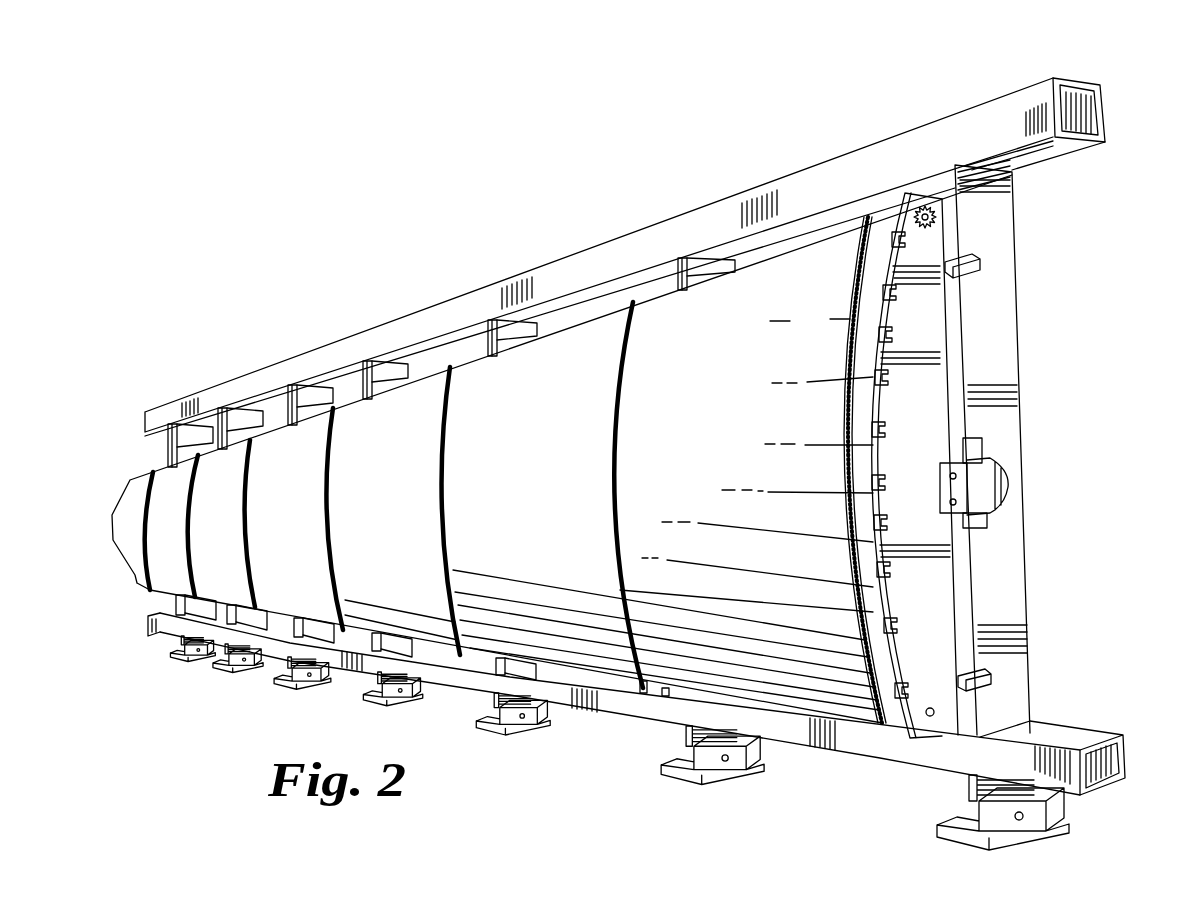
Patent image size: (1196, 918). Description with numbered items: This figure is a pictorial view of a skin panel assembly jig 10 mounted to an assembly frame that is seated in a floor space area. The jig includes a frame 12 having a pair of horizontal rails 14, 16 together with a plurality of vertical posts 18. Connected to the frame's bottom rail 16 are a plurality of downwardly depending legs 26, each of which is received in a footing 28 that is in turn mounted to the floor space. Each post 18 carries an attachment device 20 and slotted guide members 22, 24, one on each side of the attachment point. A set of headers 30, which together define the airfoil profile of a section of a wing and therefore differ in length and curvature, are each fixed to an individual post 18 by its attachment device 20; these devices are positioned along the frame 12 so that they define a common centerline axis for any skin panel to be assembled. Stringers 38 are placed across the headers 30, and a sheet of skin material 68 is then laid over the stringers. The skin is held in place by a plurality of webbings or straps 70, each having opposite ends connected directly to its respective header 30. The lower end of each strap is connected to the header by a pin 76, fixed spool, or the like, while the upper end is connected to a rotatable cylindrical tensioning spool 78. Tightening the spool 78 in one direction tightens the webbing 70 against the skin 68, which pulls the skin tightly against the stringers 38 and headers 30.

The skin panel assembly jig 10 is at (1107, 270).
The frame 12 is at (538, 268).
The horizontal rail 14 is at (917, 136).
The bottom rail 16 is at (648, 705).
The vertical post 18 is at (1003, 352).
The attachment device 20 is at (1010, 487).
The slotted guide member 22 is at (983, 263).
The slotted guide member 24 is at (990, 672).
The leg 26 is at (180, 637).
The footing 28 is at (190, 660).
The header 30 is at (930, 408).
The stringer 38 is at (905, 297).
The sheet of skin material 68 is at (697, 305).
The webbing or strap 70 is at (145, 533).
The pin 76 is at (920, 703).
The rotatable cylindrical tensioning spool 78 is at (937, 214).